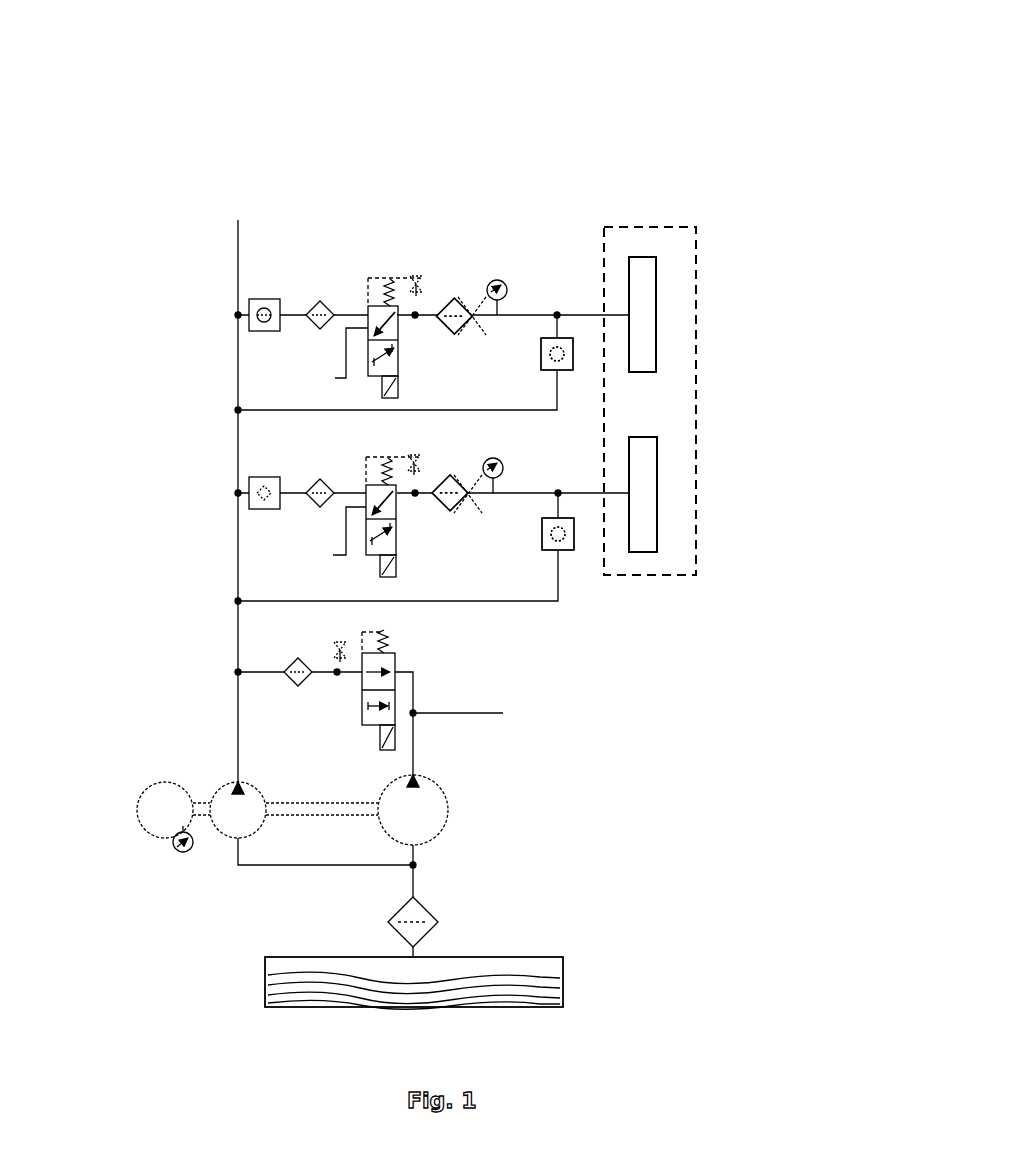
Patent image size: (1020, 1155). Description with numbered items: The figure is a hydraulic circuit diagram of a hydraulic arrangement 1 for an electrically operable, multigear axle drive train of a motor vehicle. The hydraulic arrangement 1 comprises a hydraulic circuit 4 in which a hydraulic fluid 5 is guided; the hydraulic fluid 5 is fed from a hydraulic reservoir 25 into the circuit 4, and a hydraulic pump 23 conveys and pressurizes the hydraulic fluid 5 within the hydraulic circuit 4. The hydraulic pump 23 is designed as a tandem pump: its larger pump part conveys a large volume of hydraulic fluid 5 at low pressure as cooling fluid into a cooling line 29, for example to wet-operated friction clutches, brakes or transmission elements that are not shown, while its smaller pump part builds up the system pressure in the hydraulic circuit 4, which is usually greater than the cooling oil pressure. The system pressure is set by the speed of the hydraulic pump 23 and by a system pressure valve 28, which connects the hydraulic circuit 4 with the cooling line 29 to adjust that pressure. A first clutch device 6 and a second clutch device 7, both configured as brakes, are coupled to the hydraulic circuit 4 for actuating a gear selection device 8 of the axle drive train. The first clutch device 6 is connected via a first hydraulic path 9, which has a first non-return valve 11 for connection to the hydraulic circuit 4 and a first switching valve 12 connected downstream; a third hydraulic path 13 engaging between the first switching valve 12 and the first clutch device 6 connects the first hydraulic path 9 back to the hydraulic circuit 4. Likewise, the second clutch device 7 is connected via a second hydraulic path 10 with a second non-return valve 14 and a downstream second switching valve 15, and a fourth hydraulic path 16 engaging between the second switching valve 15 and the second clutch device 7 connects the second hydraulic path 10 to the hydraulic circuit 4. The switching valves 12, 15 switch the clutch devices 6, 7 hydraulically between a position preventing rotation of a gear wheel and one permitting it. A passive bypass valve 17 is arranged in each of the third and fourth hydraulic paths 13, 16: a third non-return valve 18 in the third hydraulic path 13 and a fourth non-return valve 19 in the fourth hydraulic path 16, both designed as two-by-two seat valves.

The hydraulic arrangement 1 is at (268, 120).
The hydraulic circuit 4 is at (237, 737).
The hydraulic fluid 5 is at (565, 983).
The first clutch device 6 is at (657, 475).
The second clutch device 7 is at (656, 290).
The gear selection device 8 is at (660, 220).
The first hydraulic path 9 is at (520, 493).
The second hydraulic path 10 is at (520, 315).
The first non-return valve 11 is at (262, 477).
The first switching valve 12 is at (543, 603).
The third hydraulic path 13 is at (436, 550).
The second non-return valve 14 is at (267, 298).
The second switching valve 15 is at (392, 246).
The fourth hydraulic path 16 is at (455, 410).
The passive bypass valve 17 is at (571, 335).
The third non-return valve 18 is at (566, 553).
The fourth non-return valve 19 is at (591, 247).
The hydraulic pump 23 is at (196, 868).
The hydraulic reservoir 25 is at (335, 378).
The system pressure valve 28 is at (398, 667).
The cooling line 29 is at (468, 715).